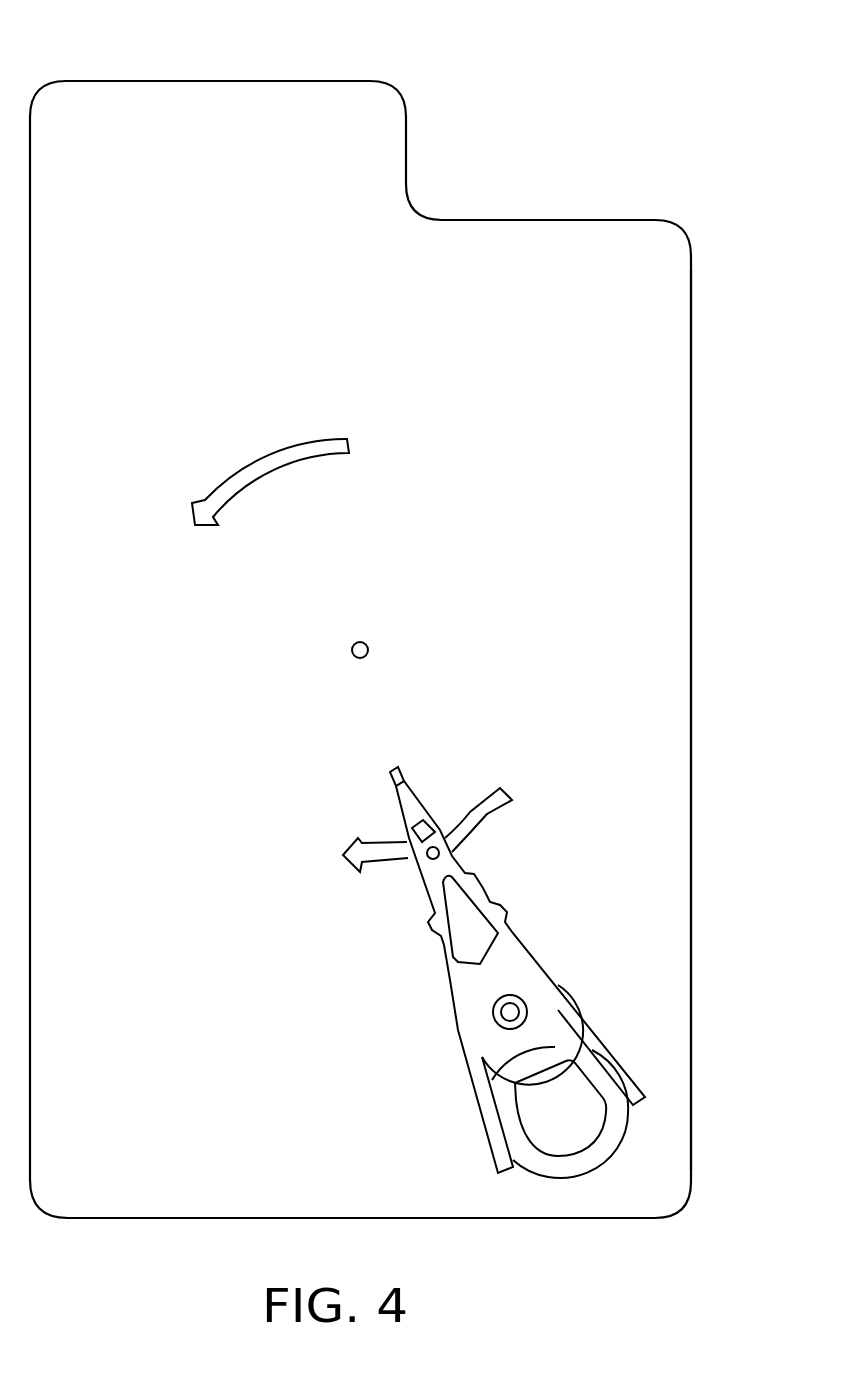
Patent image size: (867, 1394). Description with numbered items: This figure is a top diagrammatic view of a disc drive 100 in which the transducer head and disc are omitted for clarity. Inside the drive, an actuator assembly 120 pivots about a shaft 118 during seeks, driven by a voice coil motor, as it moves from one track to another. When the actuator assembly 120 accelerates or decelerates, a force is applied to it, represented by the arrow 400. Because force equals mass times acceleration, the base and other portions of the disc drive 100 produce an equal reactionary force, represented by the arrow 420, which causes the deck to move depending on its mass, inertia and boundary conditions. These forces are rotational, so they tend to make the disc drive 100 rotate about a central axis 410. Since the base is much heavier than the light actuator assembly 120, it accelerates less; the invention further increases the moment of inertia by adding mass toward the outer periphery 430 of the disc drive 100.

The disc drive 100 is at (202, 94).
The outer periphery 430 is at (692, 720).
The arrow representing reactionary force 420 is at (268, 457).
The central axis 410 is at (367, 644).
The arrow representing driving force on actuator 400 is at (488, 824).
The shaft 118 is at (495, 1010).
The actuator assembly 120 is at (548, 1007).